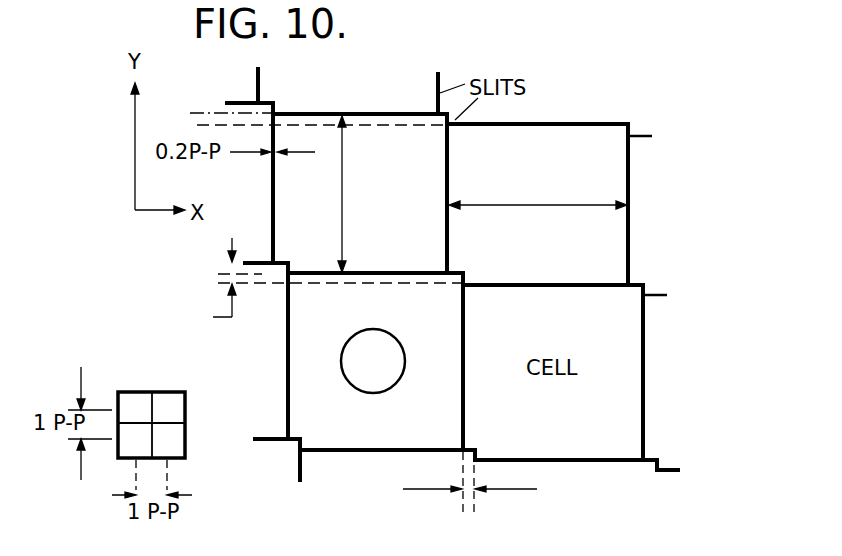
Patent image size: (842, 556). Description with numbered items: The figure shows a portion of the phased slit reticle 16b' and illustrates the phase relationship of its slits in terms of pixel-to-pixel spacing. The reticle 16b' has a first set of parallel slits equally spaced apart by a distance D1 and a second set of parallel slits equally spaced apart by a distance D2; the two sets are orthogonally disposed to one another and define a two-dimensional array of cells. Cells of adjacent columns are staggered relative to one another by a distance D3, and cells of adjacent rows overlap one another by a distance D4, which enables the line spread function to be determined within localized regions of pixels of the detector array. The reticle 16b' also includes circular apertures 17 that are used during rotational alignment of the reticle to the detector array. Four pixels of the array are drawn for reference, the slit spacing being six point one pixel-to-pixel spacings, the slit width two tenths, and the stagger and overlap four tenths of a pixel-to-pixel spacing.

The circular apertures 17 is at (390, 388).
The phased slit reticle 16b' is at (589, 169).
The distance D1 is at (538, 179).
The distance D2 is at (380, 194).
The distance D3 is at (190, 290).
The distance D4 is at (505, 491).